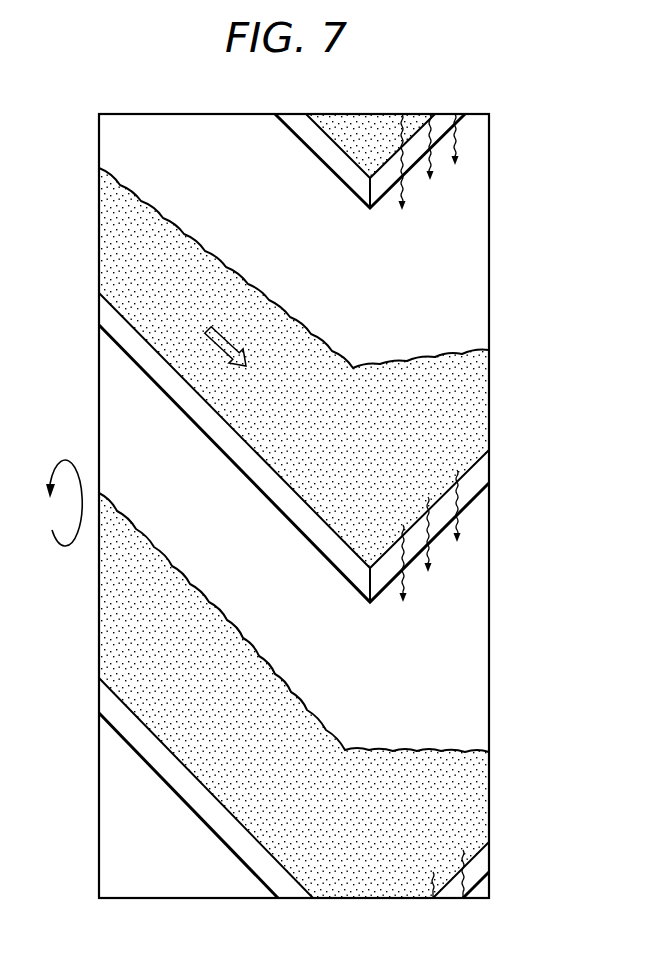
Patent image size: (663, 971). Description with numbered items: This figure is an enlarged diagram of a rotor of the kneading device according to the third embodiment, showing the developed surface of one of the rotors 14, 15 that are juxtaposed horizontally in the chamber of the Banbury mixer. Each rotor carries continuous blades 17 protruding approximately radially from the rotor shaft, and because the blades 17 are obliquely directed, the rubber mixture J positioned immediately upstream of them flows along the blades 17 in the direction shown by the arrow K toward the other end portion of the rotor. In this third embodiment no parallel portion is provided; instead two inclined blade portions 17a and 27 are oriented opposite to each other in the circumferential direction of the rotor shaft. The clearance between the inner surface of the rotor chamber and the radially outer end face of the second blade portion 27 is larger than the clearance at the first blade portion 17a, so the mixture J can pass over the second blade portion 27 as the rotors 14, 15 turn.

The rotor 14 is at (345, 506).
The rotor 15 is at (496, 326).
The continuous blade 17 is at (294, 595).
The first blade portion 17a is at (285, 508).
The second blade portion 27 is at (377, 185).
The rubber mixture J is at (308, 345).
The arrow K is at (219, 335).